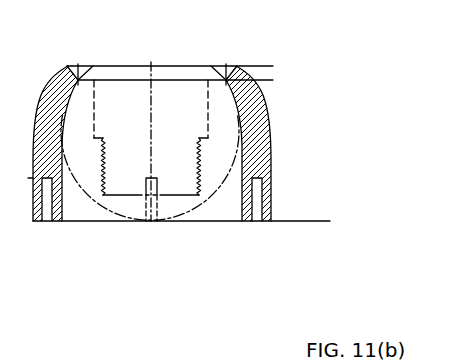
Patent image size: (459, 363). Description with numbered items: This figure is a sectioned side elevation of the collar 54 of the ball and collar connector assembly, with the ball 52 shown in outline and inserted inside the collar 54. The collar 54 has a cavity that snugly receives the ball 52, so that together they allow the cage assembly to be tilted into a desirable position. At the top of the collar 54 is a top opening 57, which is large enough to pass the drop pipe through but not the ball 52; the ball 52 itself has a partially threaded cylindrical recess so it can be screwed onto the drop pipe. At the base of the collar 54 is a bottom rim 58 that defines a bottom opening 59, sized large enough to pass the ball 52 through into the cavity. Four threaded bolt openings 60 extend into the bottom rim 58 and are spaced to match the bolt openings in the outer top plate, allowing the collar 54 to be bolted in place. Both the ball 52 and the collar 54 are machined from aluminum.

The ball 52 is at (179, 203).
The collar 54 is at (285, 125).
The top opening 57 is at (177, 74).
The bottom rim 58 is at (266, 221).
The bottom opening 59 is at (120, 222).
The threaded bolt openings 60 is at (46, 221).